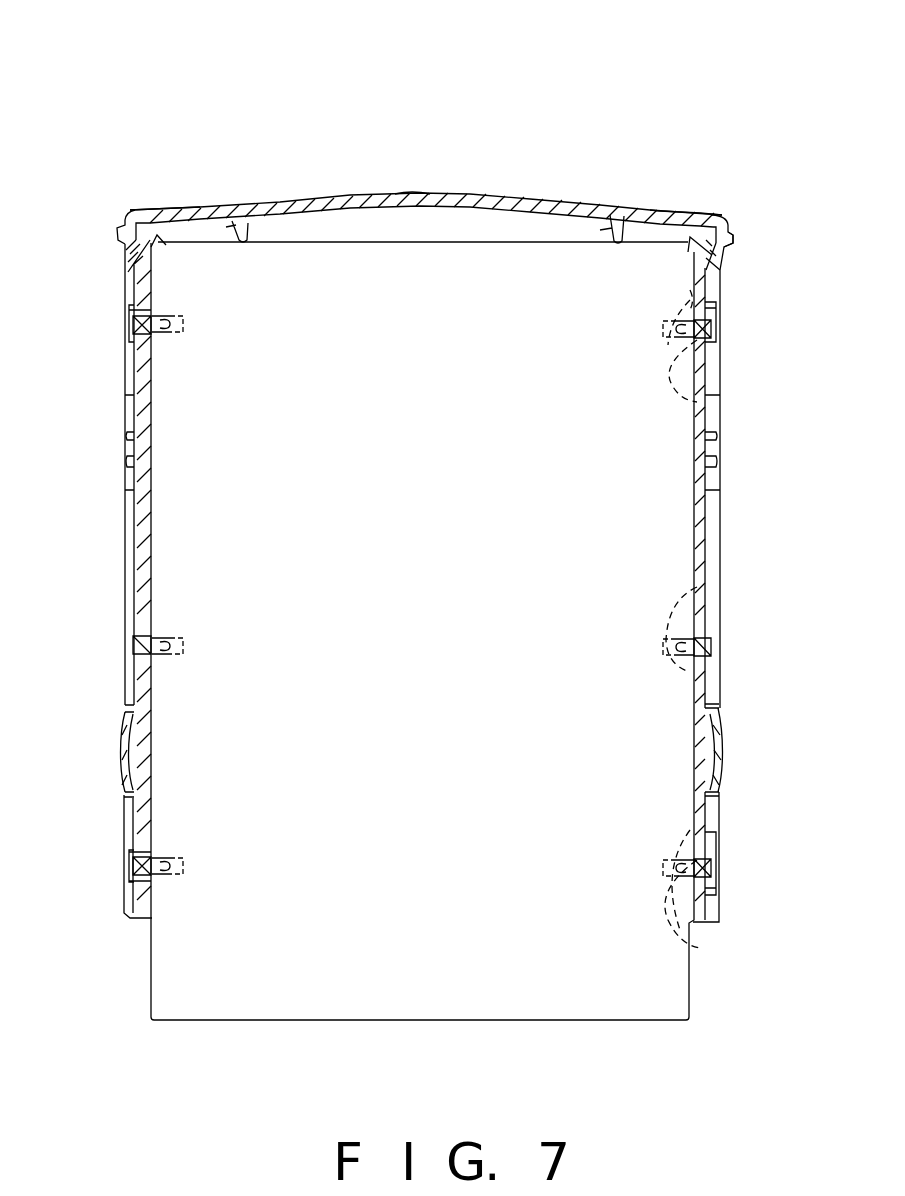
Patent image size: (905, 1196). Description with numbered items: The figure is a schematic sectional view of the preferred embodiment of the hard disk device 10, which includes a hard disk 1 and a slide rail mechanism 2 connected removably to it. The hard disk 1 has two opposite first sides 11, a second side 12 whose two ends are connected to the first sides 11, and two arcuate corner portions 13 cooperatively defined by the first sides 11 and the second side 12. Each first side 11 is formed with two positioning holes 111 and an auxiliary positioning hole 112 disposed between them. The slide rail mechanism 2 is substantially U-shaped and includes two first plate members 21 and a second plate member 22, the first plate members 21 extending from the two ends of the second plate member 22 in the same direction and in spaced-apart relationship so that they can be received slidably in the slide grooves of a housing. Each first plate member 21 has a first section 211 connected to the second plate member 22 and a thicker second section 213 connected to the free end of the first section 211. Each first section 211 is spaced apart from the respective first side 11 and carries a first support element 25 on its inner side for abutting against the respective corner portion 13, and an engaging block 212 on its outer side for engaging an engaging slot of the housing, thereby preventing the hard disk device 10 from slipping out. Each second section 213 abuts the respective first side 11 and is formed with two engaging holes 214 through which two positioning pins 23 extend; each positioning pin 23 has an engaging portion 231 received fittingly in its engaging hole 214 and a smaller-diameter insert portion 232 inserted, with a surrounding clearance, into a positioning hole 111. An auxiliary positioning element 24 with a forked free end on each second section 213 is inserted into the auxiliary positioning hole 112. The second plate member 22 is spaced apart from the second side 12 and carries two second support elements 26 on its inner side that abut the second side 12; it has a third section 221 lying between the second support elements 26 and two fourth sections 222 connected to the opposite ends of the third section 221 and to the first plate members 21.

The hard disk 1 is at (240, 1043).
The hard disk device 10 is at (603, 128).
The first sides 11 is at (148, 593).
The positioning holes 111 is at (720, 418).
The auxiliary positioning hole 112 is at (705, 585).
The second side 12 is at (345, 241).
The corner portions 13 is at (160, 246).
The slide rail mechanism 2 is at (530, 190).
The first plate members 21 is at (130, 692).
The first section 211 is at (137, 270).
The engaging block 212 is at (735, 237).
The second section 213 is at (132, 508).
The engaging holes 214 is at (705, 325).
The second plate member 22 is at (415, 193).
The third section 221 is at (478, 200).
The fourth sections 222 is at (163, 212).
The positioning pins 23 is at (716, 285).
The engaging portion 231 is at (700, 335).
The insert portion 232 is at (720, 380).
The auxiliary positioning element 24 is at (710, 672).
The first support element 25 is at (128, 228).
The second support elements 26 is at (243, 226).